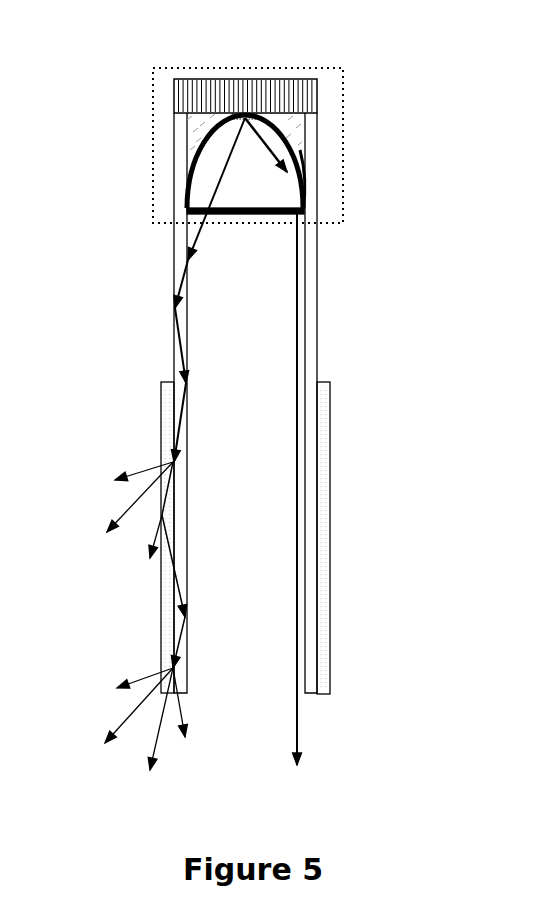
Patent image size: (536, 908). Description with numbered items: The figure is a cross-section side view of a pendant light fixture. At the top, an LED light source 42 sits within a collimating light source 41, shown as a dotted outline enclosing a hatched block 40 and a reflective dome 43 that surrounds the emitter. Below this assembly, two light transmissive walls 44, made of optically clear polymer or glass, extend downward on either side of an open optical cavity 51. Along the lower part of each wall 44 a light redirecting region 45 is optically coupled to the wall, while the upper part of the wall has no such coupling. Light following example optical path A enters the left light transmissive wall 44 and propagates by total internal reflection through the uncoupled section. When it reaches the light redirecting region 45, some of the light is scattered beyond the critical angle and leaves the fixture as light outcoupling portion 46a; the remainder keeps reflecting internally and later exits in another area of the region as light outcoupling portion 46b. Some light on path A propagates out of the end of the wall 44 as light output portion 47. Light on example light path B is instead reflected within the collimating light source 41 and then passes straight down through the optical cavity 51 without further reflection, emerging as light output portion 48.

The light source 40 is at (283, 83).
The collimating light source 41 is at (152, 147).
The LED light source 42 is at (245, 118).
The reflector dome 43 is at (293, 150).
The light transmissive wall 44 is at (180, 245).
The light redirecting region 45 is at (323, 420).
The light outcoupling portion 46a is at (127, 516).
The light outcoupling portion 46b is at (116, 719).
The light output portion 47 is at (188, 640).
The light output portion 48 is at (301, 509).
The optical cavity 51 is at (257, 327).
The example optical path A is at (213, 188).
The example light path B is at (270, 143).